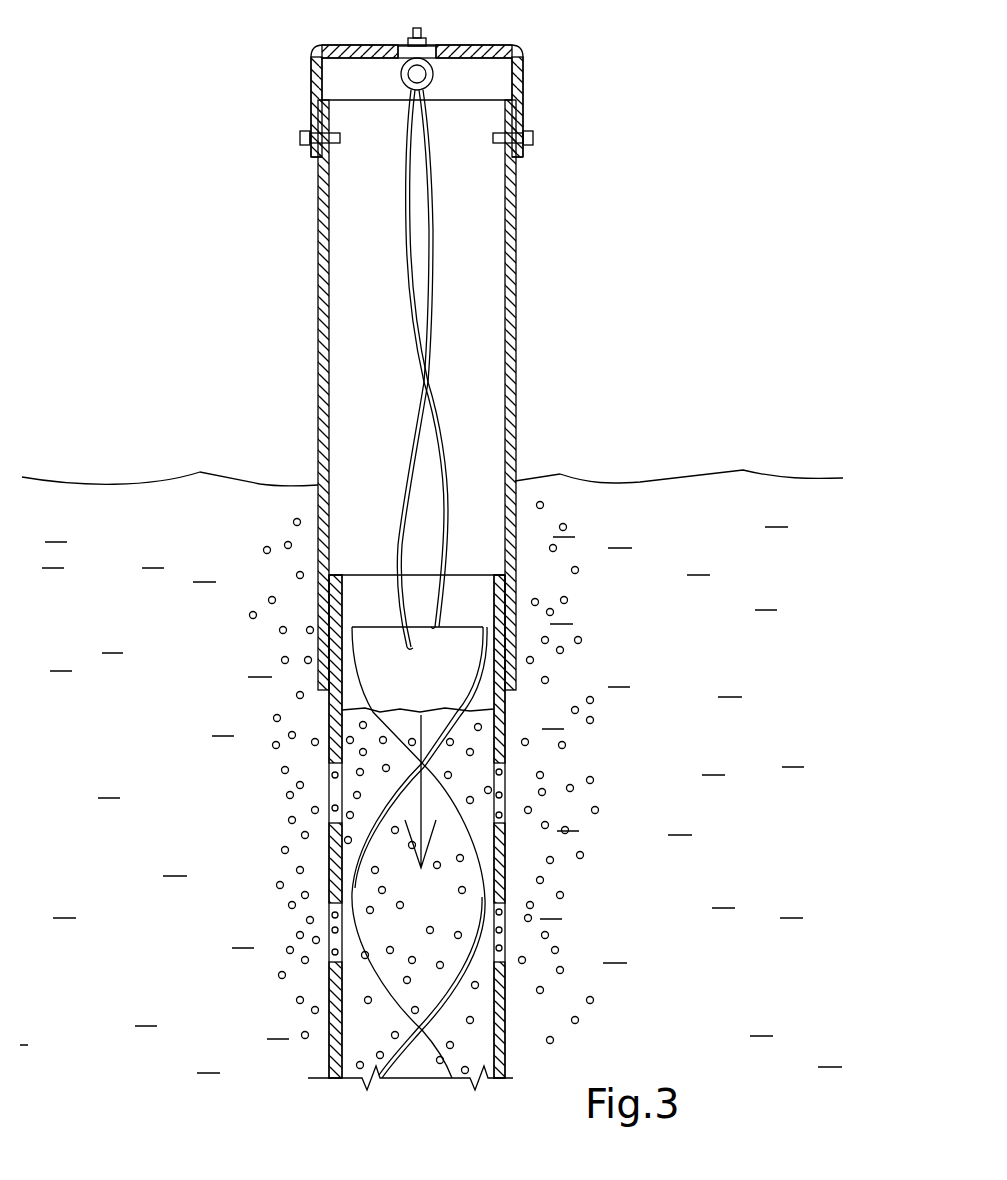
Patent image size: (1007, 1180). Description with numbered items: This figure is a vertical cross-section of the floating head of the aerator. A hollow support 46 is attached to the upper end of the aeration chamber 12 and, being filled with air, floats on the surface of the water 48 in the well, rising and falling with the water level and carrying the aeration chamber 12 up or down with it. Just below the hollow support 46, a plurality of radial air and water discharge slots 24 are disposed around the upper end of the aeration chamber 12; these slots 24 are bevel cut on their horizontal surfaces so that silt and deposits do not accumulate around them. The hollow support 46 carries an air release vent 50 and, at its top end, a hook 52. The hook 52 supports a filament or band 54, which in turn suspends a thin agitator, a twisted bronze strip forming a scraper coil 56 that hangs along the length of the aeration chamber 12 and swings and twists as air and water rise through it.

The aeration chamber 12 is at (495, 680).
The air and water discharge slots 24 is at (333, 915).
The hollow support 46 is at (515, 232).
The surface of the water 48 is at (160, 478).
The air release vent 50 is at (425, 52).
The hook 52 is at (433, 77).
The filament or band 54 is at (435, 308).
The scraper coil 56 is at (385, 645).